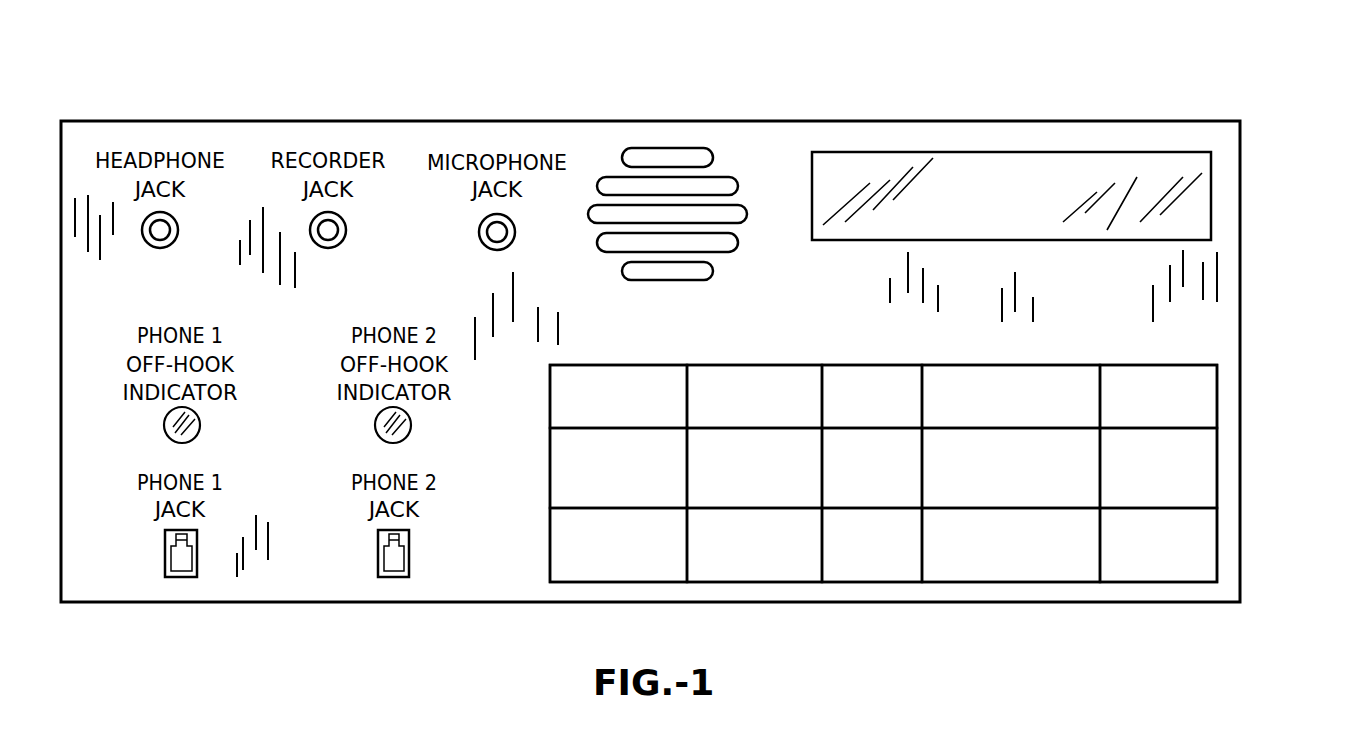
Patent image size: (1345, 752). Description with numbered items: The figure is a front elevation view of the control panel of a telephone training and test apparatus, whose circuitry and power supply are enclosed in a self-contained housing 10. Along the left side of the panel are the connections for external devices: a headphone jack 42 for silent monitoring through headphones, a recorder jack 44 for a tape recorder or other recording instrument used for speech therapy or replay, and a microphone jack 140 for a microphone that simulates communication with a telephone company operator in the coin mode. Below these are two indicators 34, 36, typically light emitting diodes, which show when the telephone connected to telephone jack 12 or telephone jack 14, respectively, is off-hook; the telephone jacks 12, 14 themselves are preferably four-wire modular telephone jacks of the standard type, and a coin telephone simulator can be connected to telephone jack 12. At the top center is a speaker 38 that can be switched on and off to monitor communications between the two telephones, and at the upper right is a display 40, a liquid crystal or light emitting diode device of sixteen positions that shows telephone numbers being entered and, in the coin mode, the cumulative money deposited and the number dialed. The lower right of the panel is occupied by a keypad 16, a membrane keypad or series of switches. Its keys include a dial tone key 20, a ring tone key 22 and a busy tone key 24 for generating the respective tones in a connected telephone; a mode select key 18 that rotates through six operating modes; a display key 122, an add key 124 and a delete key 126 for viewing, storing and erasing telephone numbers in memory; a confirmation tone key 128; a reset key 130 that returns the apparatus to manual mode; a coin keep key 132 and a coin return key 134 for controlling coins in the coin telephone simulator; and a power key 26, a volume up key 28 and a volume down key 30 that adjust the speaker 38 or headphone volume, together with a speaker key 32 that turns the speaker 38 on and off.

The housing 10 is at (822, 122).
The telephone jack 12 is at (165, 567).
The telephone jack 14 is at (409, 560).
The keypad 16 is at (1222, 589).
The mode select key 18 is at (550, 473).
The dial tone key 20 is at (550, 402).
The ring tone key 22 is at (738, 365).
The busy tone key 24 is at (842, 365).
The power key 26 is at (608, 582).
The volume up key 28 is at (748, 582).
The volume down key 30 is at (878, 582).
The speaker key 32 is at (1017, 582).
The indicator 34 is at (165, 426).
The indicator 36 is at (375, 425).
The speaker 38 is at (738, 273).
The display 40 is at (1038, 240).
The headphone jack 42 is at (160, 248).
The recorder jack 44 is at (328, 248).
The display key 122 is at (702, 443).
The add key 124 is at (912, 447).
The delete key 126 is at (1070, 448).
The confirmation tone key 128 is at (1017, 365).
The reset key 130 is at (1217, 393).
The coin keep key 132 is at (1217, 467).
The coin return key 134 is at (1217, 530).
The microphone jack 140 is at (490, 254).